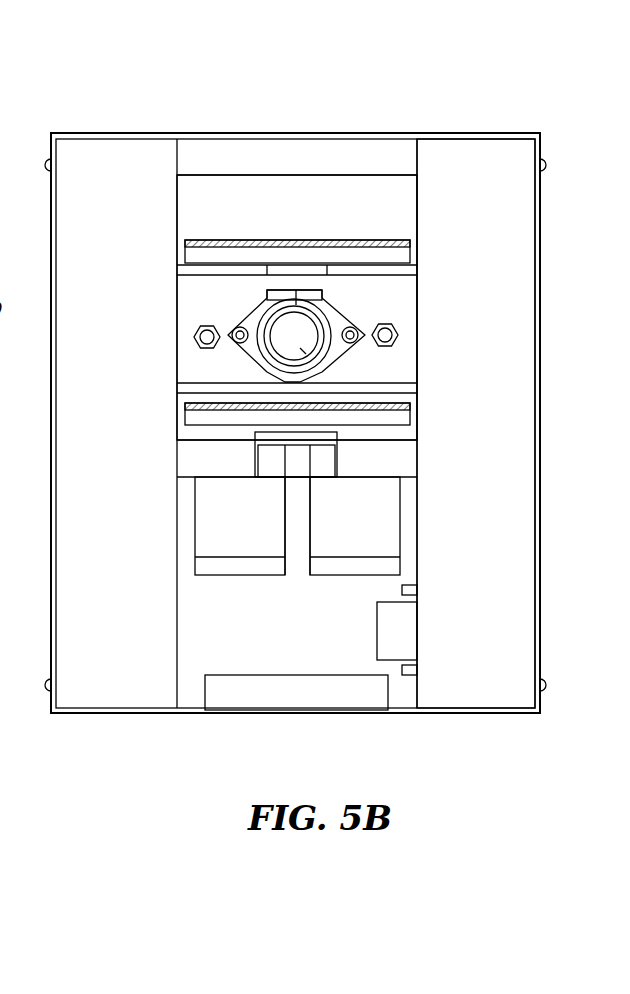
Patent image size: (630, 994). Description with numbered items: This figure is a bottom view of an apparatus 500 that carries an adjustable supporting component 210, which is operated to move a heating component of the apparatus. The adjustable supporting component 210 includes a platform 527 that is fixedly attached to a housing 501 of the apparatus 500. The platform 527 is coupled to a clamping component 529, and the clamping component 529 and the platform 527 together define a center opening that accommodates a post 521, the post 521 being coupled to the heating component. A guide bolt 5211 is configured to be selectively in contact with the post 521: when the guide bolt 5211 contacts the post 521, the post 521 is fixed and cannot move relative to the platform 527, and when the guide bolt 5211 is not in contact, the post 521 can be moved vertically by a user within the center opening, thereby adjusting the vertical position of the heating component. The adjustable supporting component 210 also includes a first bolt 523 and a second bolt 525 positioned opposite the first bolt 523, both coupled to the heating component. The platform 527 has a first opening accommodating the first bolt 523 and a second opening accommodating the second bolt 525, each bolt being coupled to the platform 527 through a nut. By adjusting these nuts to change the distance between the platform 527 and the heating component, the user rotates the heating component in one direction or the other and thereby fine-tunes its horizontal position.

The apparatus 500 is at (311, 60).
The housing 501 is at (450, 177).
The platform 527 is at (203, 290).
The clamping component 529 is at (325, 296).
The second bolt 525 is at (398, 329).
The post 521 is at (335, 353).
The first bolt 523 is at (194, 341).
The guide bolt 5211 is at (177, 384).
The adjustable supporting component 210 is at (348, 370).